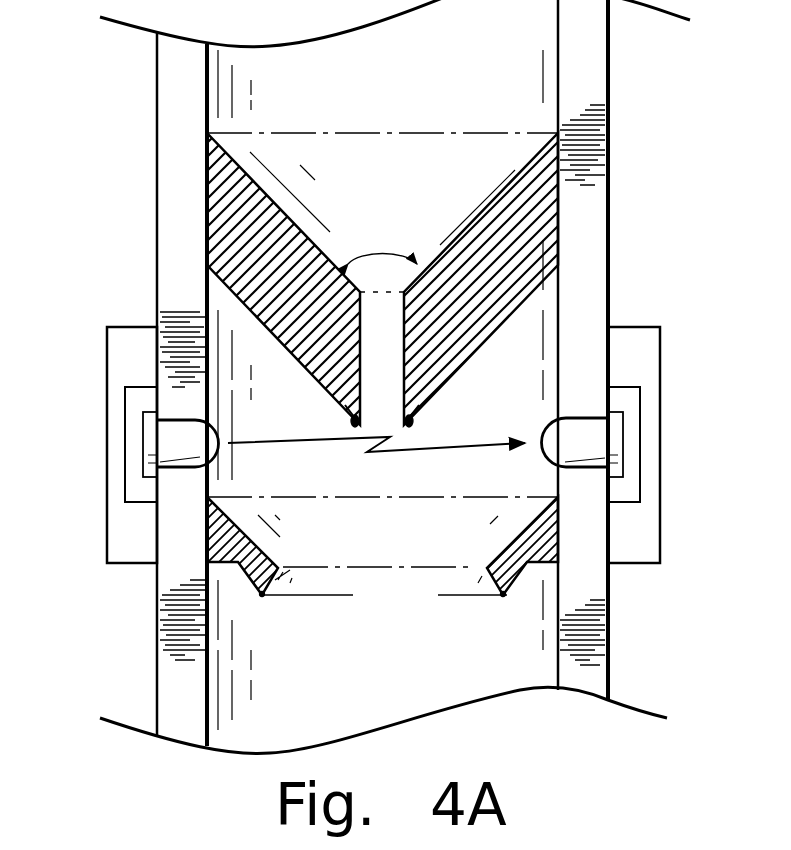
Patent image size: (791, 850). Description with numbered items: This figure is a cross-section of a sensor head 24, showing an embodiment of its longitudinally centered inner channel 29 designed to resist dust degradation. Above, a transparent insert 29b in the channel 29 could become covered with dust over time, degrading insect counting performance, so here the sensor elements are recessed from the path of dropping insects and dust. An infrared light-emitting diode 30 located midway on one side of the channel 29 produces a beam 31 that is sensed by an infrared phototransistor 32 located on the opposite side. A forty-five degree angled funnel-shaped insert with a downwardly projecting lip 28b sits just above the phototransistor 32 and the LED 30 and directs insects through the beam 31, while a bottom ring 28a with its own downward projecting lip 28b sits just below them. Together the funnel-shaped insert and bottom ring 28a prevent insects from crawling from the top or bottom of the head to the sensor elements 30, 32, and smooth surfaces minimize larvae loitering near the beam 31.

The sensor head 24 is at (118, 97).
The inner channel 29 is at (517, 65).
The transparent insert 29b is at (250, 180).
The bottom ring 28a is at (257, 530).
The downward projecting lip 28b is at (350, 414).
The infrared light-emitting diode 30 is at (143, 444).
The beam 31 is at (330, 444).
The infrared phototransistor 32 is at (595, 438).